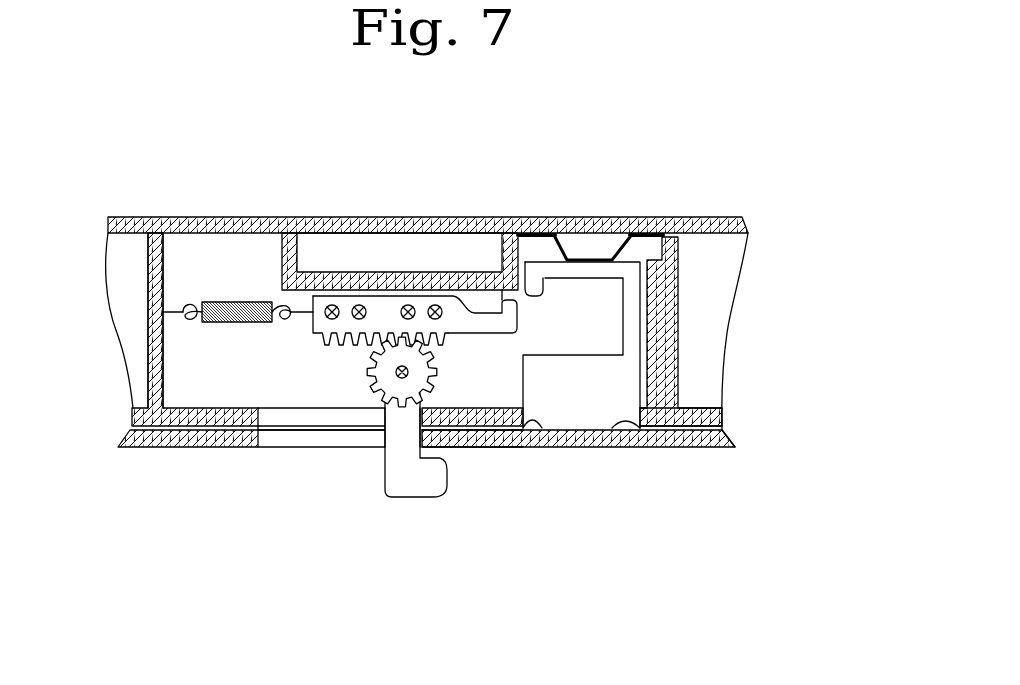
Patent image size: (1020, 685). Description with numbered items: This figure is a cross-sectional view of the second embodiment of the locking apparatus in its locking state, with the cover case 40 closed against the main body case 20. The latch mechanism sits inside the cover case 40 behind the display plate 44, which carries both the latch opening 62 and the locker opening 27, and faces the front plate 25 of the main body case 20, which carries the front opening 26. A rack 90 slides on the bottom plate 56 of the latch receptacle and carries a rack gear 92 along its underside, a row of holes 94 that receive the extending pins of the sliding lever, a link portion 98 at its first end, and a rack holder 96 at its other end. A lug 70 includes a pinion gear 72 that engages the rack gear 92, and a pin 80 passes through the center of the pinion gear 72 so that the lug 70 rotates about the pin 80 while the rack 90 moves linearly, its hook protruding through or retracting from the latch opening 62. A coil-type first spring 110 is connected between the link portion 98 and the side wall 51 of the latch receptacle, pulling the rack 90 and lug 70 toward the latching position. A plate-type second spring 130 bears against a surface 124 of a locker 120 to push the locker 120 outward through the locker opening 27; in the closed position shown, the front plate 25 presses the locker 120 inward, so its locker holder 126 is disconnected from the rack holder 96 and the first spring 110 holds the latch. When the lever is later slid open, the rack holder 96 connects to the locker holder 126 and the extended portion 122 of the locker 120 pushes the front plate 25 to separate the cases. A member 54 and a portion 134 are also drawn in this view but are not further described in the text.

The main body case 20 is at (196, 447).
The front plate 25 is at (681, 447).
The front opening 26 is at (273, 438).
The locker opening 27 is at (540, 418).
The cover case 40 is at (752, 340).
The display plate 44 is at (517, 440).
The side wall 51 is at (165, 262).
The bracket 54 is at (504, 252).
The bottom plate 56 is at (190, 375).
The latch opening 62 is at (312, 418).
The lug 70 is at (407, 477).
The pinion gear 72 is at (497, 418).
The pin 80 is at (383, 410).
The rack 90 is at (306, 335).
The rack gear 92 is at (350, 340).
The holes 94 is at (360, 304).
The rack holder 96 is at (513, 320).
The link portion 98 is at (282, 324).
The first spring 110 is at (238, 302).
The locker 120 is at (567, 418).
The extended portion 122 is at (627, 430).
The surface 124 is at (660, 262).
The locker holder 126 is at (545, 293).
The second spring 130 is at (586, 258).
The lining 134 is at (605, 258).